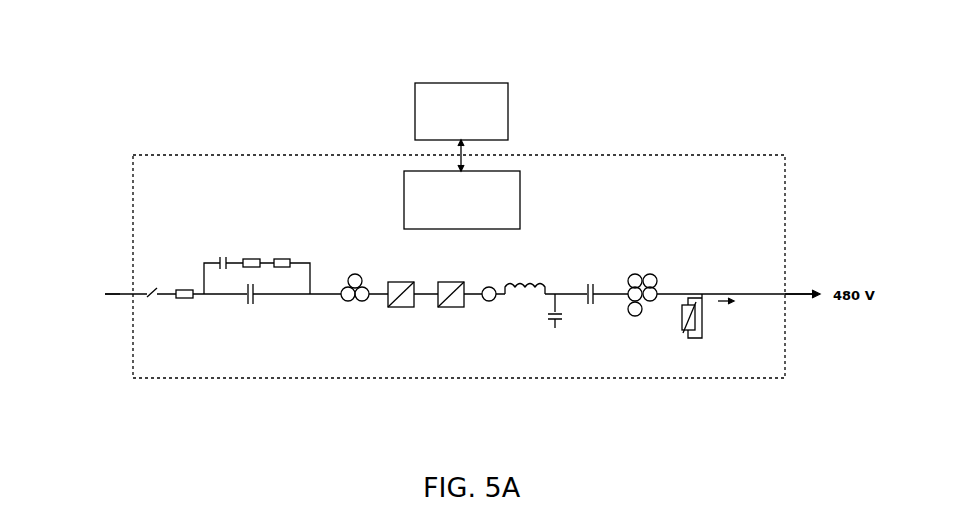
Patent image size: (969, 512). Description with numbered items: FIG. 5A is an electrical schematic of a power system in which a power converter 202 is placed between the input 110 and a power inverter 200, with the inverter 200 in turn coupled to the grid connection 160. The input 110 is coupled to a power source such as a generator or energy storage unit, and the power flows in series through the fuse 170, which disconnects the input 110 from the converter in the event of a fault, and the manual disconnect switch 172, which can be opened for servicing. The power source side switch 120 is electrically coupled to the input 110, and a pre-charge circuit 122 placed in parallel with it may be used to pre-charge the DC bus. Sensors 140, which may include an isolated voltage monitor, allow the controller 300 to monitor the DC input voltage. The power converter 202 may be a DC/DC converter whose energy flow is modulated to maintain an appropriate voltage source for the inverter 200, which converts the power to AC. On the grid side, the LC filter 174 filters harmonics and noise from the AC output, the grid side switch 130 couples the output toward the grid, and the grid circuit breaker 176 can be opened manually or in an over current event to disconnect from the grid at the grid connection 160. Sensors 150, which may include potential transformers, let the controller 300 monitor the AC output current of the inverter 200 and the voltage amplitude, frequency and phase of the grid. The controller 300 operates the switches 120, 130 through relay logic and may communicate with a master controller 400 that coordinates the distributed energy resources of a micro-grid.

The input 110 is at (102, 285).
The power source side switch 120 is at (247, 308).
The pre-charge circuit 122 is at (258, 245).
The grid side switch 130 is at (600, 285).
The sensors 140 is at (345, 312).
The sensors 150 is at (645, 318).
The grid connection 160 is at (823, 285).
The fuse 170 is at (178, 283).
The manual disconnect switch 172 is at (147, 303).
The LC filter 174 is at (537, 275).
The grid circuit breaker 176 is at (730, 280).
The power inverter 200 is at (455, 308).
The power converter 202 is at (400, 308).
The controller 300 is at (520, 175).
The master controller 400 is at (508, 88).